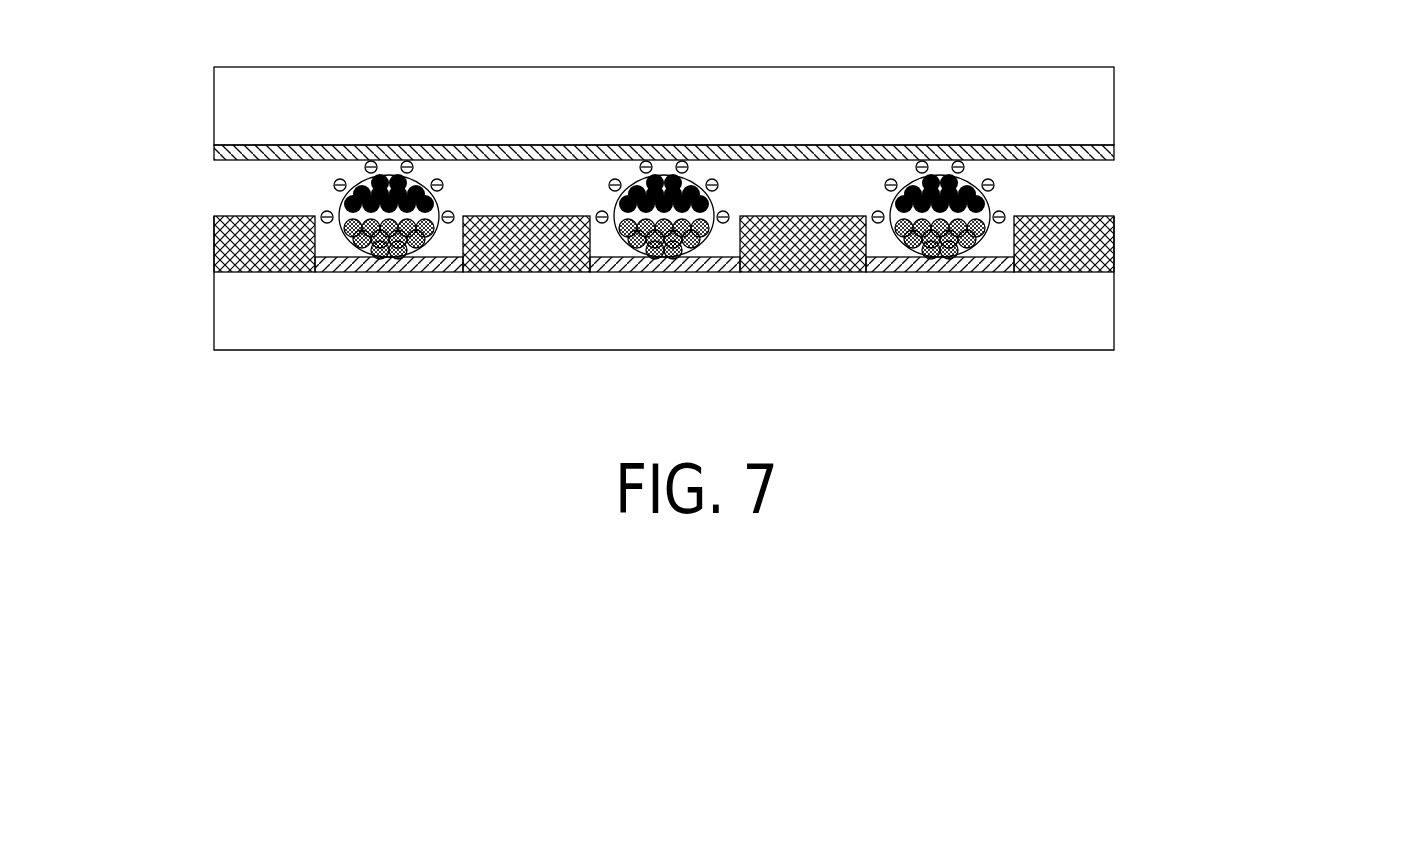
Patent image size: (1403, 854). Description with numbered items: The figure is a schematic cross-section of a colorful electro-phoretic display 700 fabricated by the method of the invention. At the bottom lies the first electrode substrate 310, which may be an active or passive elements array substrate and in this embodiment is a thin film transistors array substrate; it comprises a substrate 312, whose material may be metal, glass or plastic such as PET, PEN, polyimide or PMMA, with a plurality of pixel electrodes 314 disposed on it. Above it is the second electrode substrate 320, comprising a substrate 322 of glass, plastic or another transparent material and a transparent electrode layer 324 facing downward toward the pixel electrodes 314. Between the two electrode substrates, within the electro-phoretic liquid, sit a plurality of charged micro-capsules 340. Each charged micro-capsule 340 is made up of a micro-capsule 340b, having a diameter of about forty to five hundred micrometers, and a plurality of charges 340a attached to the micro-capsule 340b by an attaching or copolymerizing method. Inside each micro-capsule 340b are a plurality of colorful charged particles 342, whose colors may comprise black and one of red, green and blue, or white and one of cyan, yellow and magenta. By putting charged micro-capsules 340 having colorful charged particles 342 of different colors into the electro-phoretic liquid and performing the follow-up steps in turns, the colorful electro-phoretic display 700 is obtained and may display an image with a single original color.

The colorful electro-phoretic display 700 is at (1170, 420).
The second electrode substrate 320 is at (762, 131).
The substrate 322 is at (1102, 110).
The transparent electrode layer 324 is at (725, 165).
The first electrode substrate 310 is at (808, 286).
The substrate 312 is at (1095, 325).
The pixel electrodes 314 is at (993, 267).
The charged micro-capsule 340 is at (527, 208).
The charges 340a is at (333, 183).
The micro-capsule 340b is at (342, 206).
The colorful charged particles 342 is at (352, 240).